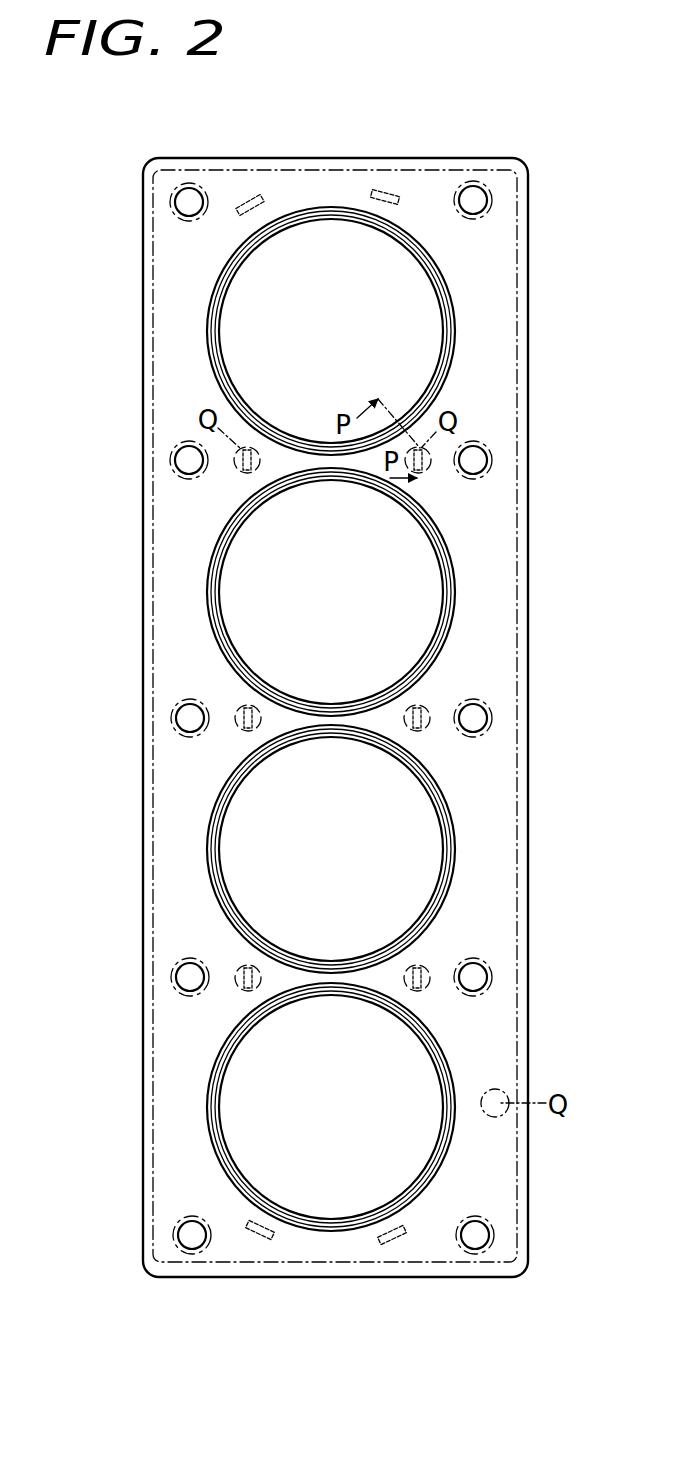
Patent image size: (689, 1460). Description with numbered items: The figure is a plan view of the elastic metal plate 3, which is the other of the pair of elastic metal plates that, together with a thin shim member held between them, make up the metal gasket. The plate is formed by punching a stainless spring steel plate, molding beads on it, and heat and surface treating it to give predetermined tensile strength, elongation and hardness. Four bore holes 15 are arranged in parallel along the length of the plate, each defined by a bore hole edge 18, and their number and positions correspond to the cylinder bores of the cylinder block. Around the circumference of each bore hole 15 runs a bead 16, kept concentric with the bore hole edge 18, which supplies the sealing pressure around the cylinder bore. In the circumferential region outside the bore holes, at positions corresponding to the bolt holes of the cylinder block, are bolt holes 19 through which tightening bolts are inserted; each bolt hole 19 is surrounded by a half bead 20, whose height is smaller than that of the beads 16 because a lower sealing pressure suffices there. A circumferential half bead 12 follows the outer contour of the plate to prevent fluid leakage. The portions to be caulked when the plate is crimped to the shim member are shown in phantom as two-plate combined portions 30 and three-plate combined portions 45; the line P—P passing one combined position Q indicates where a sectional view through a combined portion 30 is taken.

The elastic metal plate 3 is at (537, 262).
The circumferential half bead 12 is at (515, 845).
The bore hole 15 is at (336, 366).
The bead 16 is at (397, 226).
The bore hole edge 18 is at (280, 227).
The bolt hole 19 is at (189, 203).
The half bead for bolt hole 20 is at (171, 220).
The two-plate combined portion 30 is at (262, 195).
The three-plate combined portion 45 is at (334, 721).